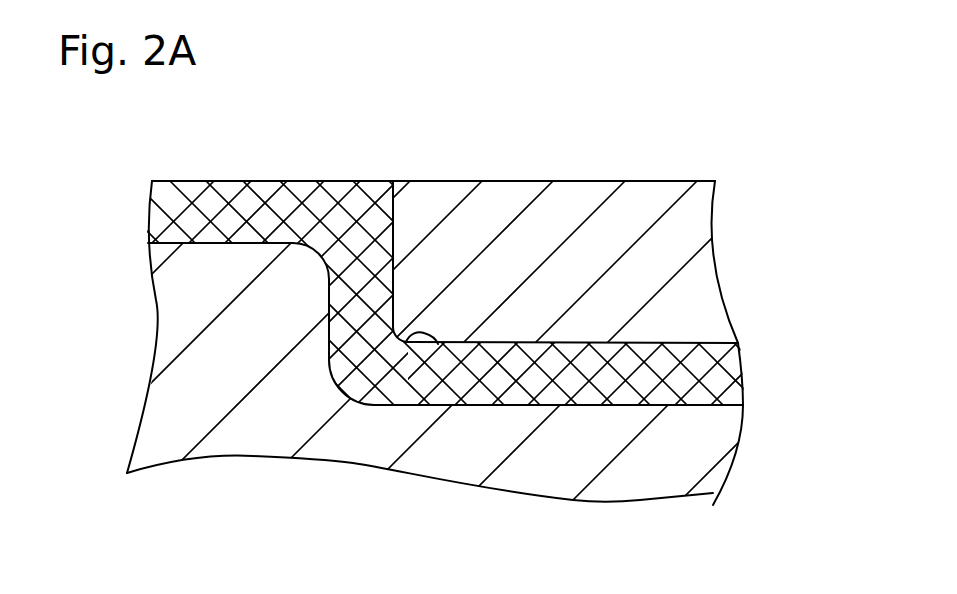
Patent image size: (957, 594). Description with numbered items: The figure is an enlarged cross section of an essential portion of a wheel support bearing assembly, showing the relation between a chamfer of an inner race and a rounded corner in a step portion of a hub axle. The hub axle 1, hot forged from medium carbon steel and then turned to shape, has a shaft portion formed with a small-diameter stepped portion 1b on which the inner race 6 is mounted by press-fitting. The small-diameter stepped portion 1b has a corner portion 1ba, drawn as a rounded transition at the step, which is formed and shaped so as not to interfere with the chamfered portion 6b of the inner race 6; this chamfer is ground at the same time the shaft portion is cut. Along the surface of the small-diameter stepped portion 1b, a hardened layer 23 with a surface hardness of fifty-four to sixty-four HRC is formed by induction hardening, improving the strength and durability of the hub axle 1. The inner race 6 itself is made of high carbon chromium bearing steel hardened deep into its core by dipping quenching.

The hub axle 1 is at (177, 297).
The small-diameter stepped portion 1b is at (610, 432).
The corner portion 1ba is at (437, 345).
The inner race 6 is at (673, 262).
The chamfered portion 6b is at (405, 338).
The hardened layer 23 is at (667, 373).